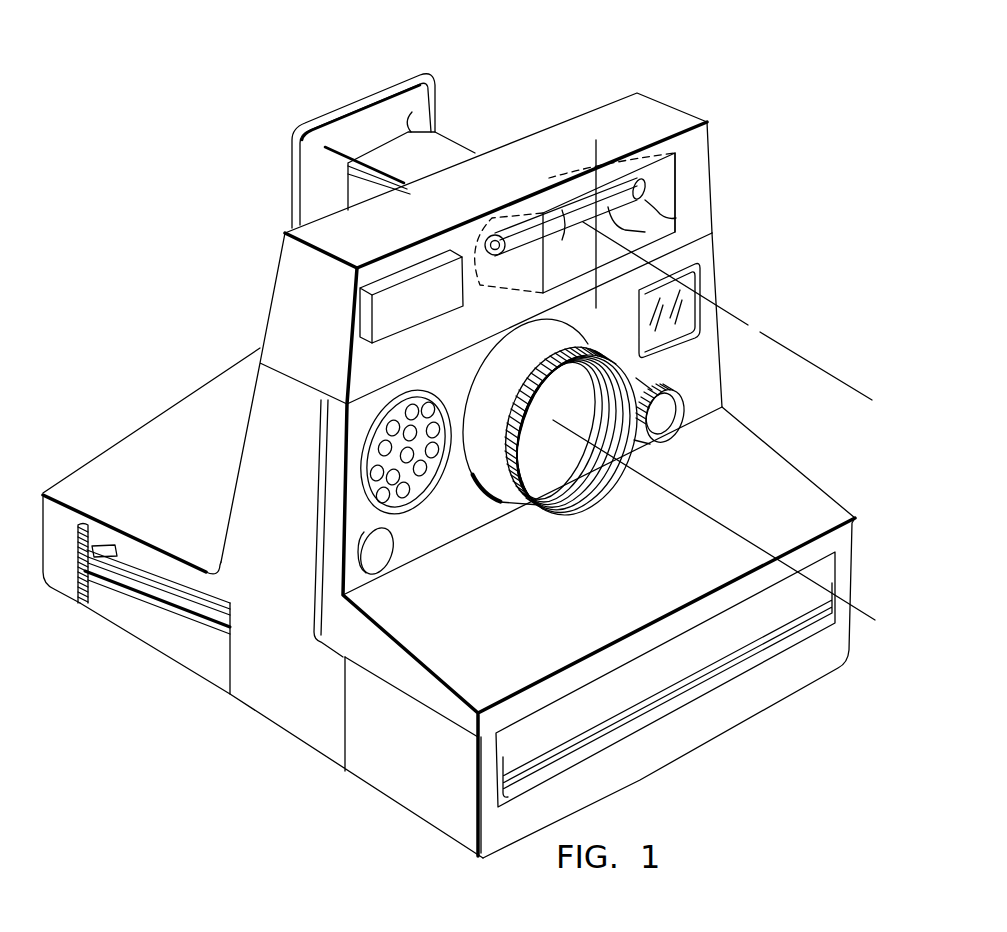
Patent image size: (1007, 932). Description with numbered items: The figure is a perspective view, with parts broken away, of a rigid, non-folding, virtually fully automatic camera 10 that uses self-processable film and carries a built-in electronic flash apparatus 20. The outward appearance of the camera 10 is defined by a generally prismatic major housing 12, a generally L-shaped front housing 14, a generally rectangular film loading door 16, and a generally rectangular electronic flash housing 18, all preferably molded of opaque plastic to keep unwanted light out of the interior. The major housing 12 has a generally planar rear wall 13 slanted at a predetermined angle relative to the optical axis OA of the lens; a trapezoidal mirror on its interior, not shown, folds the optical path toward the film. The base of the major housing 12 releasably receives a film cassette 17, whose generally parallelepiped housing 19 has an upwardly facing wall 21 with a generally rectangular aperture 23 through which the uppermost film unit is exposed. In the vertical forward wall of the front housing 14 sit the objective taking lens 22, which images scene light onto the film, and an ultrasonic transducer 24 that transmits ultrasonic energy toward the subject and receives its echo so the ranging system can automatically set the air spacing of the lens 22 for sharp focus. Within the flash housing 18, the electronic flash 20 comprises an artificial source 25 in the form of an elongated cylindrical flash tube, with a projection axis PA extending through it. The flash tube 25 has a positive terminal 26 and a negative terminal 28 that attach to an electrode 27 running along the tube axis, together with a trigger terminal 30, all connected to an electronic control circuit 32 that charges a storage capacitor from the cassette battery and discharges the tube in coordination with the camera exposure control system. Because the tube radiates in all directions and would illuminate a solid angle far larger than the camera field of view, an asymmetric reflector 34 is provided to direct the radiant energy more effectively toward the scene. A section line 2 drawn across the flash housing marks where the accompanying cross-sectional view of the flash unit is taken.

The camera 10 is at (544, 100).
The major housing 12 is at (232, 450).
The rear wall 13 is at (203, 382).
The front housing 14 is at (730, 374).
The film loading door 16 is at (427, 836).
The film cassette 17 is at (193, 669).
The electronic flash housing 18 is at (710, 152).
The cassette housing 19 is at (157, 637).
The electronic flash apparatus 20 is at (725, 222).
The upwardly facing wall 21 is at (127, 577).
The objective taking lens 22 is at (586, 505).
The rectangular aperture 23 is at (157, 580).
The ultrasonic transducer 24 is at (431, 479).
The flash tube 25 is at (612, 213).
The positive terminal 26 is at (478, 274).
The electrode 27 is at (567, 214).
The negative terminal 28 is at (676, 222).
The trigger terminal 30 is at (480, 247).
The electronic control circuit 32 is at (444, 318).
The asymmetric reflector 34 is at (676, 195).
The section line 2- 2 is at (587, 152).